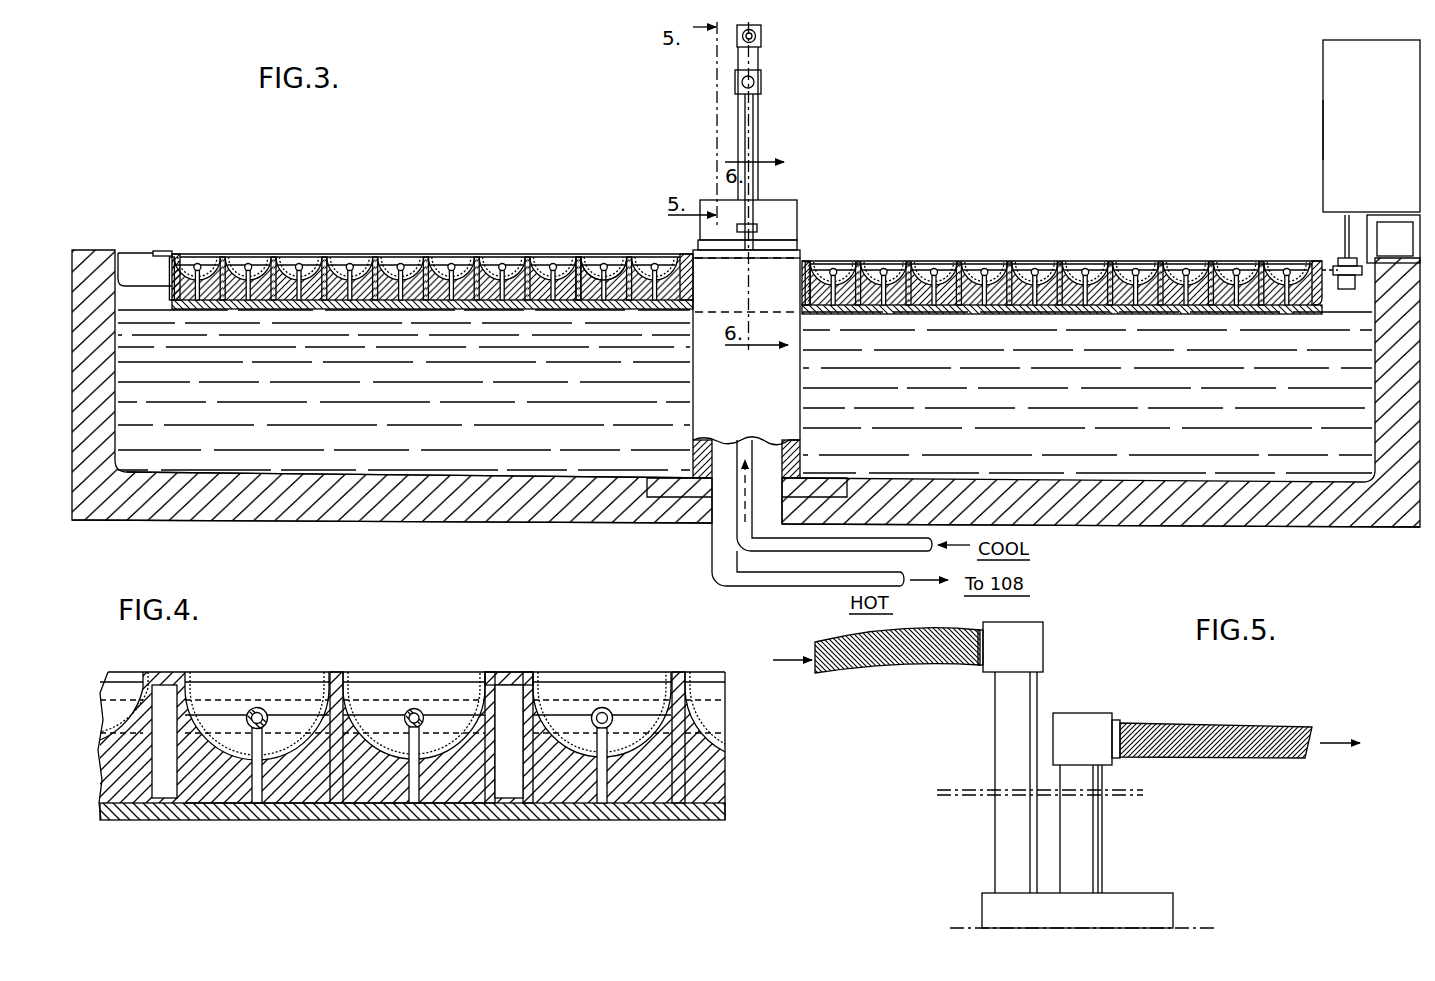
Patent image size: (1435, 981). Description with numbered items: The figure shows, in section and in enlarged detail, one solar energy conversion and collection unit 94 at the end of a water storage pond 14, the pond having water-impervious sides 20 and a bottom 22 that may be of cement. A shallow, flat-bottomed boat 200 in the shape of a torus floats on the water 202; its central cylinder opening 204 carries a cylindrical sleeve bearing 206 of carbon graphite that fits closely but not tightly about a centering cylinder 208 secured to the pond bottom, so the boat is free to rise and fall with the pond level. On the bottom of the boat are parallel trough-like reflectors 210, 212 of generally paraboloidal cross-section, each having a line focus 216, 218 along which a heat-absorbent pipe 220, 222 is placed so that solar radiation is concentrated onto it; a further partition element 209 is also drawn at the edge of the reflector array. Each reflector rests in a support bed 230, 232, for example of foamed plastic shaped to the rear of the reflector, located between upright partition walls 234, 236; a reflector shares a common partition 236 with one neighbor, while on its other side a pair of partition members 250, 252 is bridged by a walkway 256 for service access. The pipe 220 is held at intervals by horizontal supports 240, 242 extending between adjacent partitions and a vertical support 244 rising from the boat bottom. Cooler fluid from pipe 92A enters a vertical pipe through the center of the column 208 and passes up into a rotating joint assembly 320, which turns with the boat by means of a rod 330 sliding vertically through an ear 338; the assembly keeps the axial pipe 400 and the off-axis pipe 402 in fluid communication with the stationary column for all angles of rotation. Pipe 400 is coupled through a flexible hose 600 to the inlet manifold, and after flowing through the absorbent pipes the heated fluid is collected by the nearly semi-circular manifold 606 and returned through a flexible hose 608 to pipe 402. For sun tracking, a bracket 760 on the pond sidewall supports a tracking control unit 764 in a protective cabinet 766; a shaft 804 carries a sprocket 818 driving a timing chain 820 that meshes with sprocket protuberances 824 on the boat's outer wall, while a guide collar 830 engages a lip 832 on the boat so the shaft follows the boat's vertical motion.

In FIG. 3, the water storage pond 14 is at (88, 248).
In FIG. 3, the pond side 20 is at (100, 405).
In FIG. 3, the pond bottom 22 is at (345, 518).
In FIG. 3, the solar energy conversion and collection unit 94 is at (180, 250).
In FIG. 3, the boat 200 is at (160, 251).
In FIG. 4, the boat 200 is at (612, 821).
In FIG. 3, the water 202 is at (503, 432).
In FIG. 3, the central cylinder opening 204 is at (800, 270).
In FIG. 3, the cylindrical sleeve bearing 206 is at (694, 292).
In FIG. 3, the centering cylinder 208 is at (760, 394).
In FIG. 3, the partition 209 is at (648, 260).
In FIG. 4, the partition 209 is at (690, 695).
In FIG. 3, the trough-like reflector 210 is at (492, 257).
In FIG. 4, the trough-like reflector 210 is at (335, 692).
In FIG. 3, the trough-like reflector 212 is at (568, 257).
In FIG. 4, the trough-like reflector 212 is at (483, 700).
In FIG. 4, the line focus 216 is at (255, 713).
In FIG. 4, the line focus 218 is at (416, 713).
In FIG. 3, the heat-absorbent pipe 220 is at (508, 263).
In FIG. 4, the heat-absorbent pipe 220 is at (262, 706).
In FIG. 3, the heat-absorbent pipe 222 is at (553, 263).
In FIG. 4, the heat-absorbent pipe 222 is at (404, 706).
In FIG. 4, the support bed 230 is at (215, 786).
In FIG. 4, the support bed 232 is at (458, 786).
In FIG. 4, the partition wall 234 is at (170, 785).
In FIG. 4, the partition wall 236 is at (343, 772).
In FIG. 4, the horizontal support 240 is at (218, 712).
In FIG. 4, the horizontal support 242 is at (290, 720).
In FIG. 4, the vertical support 244 is at (268, 745).
In FIG. 4, the partition member 250 is at (498, 790).
In FIG. 4, the partition member 252 is at (532, 700).
In FIG. 3, the walkway 256 is at (586, 263).
In FIG. 4, the walkway 256 is at (515, 680).
In FIG. 3, the rotating joint assembly 320 is at (788, 210).
In FIG. 5, the rotating joint assembly 320 is at (1155, 905).
In FIG. 3, the rod 330 is at (749, 150).
In FIG. 3, the ear 338 is at (758, 230).
In FIG. 3, the pipe 400 is at (760, 122).
In FIG. 5, the pipe 400 is at (1088, 842).
In FIG. 3, the pipe 402 is at (760, 58).
In FIG. 5, the pipe 402 is at (1005, 728).
In FIG. 3, the flexible hose 600 is at (761, 82).
In FIG. 5, the flexible hose 600 is at (1180, 733).
In FIG. 3, the manifold 606 is at (398, 262).
In FIG. 4, the manifold 606 is at (628, 712).
In FIG. 3, the flexible hose 608 is at (762, 34).
In FIG. 5, the flexible hose 608 is at (930, 668).
In FIG. 3, the bracket 760 is at (1395, 220).
In FIG. 3, the tracking control unit 764 is at (1393, 92).
In FIG. 3, the protective cabinet 766 is at (1323, 128).
In FIG. 3, the shaft 804 is at (1345, 232).
In FIG. 3, the sprocket 818 is at (1395, 257).
In FIG. 3, the timing chain 820 is at (1332, 278).
In FIG. 3, the sprocket protuberances 824 is at (172, 272).
In FIG. 3, the guide collar 830 is at (1356, 262).
In FIG. 3, the lip 832 is at (1336, 266).
In FIG. 3, the pipe 92A is at (748, 558).